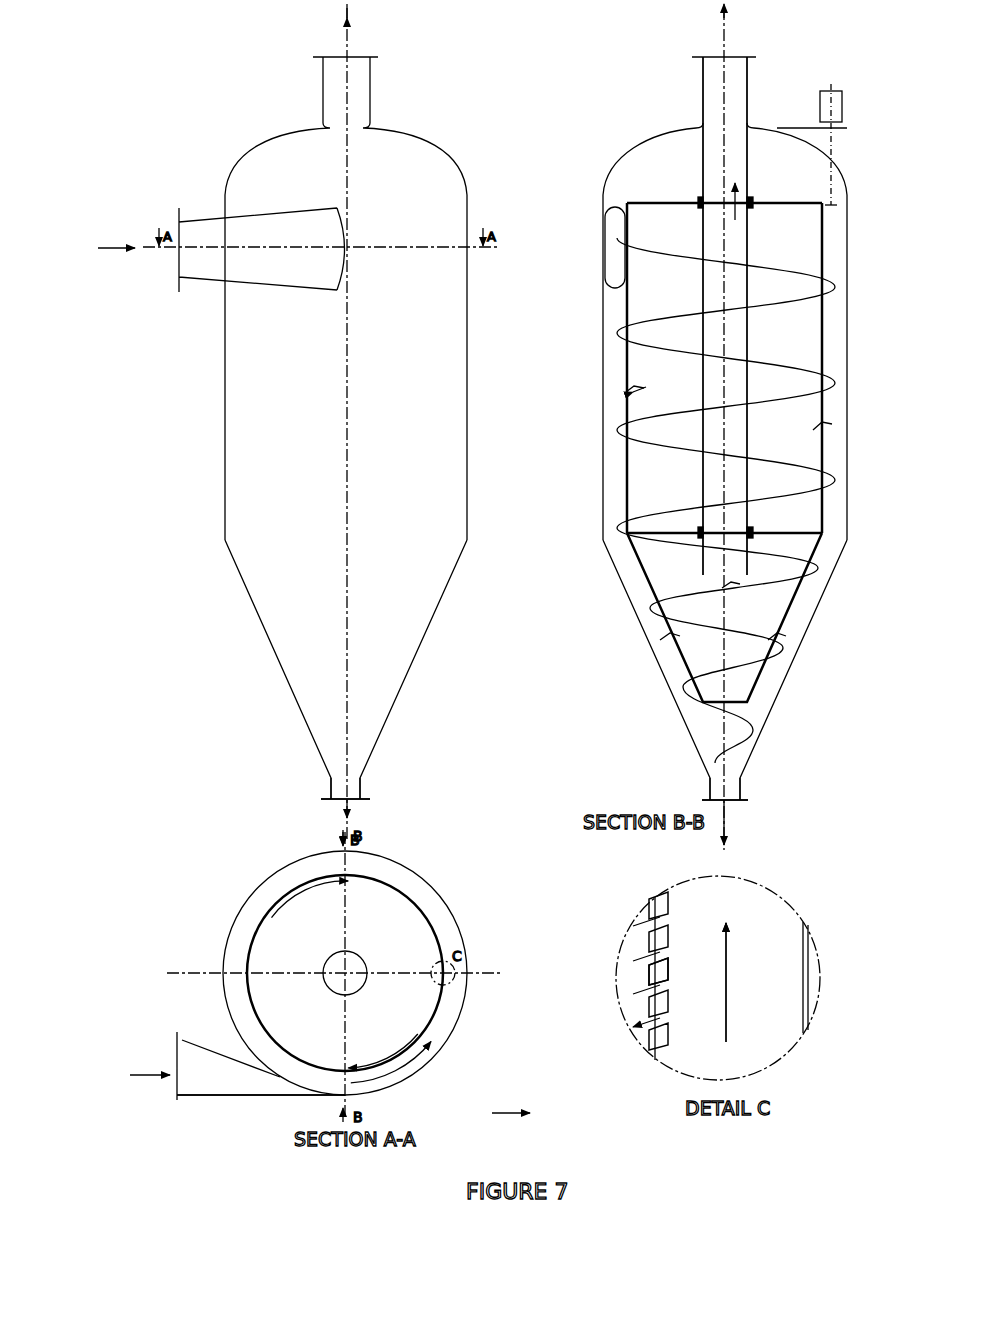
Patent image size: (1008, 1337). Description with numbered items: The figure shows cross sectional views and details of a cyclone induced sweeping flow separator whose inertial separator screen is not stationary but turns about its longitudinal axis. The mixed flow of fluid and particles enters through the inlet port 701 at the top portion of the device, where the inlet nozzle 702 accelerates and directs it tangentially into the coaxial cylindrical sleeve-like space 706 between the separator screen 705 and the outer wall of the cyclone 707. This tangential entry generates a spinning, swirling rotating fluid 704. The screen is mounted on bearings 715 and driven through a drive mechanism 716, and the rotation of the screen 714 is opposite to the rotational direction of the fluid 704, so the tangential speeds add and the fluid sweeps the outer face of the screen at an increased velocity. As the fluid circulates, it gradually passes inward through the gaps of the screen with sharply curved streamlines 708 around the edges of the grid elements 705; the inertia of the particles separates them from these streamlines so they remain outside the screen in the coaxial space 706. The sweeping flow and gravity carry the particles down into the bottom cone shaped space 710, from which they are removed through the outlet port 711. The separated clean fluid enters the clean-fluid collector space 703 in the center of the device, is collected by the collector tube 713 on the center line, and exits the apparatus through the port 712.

The inlet port 701 is at (120, 250).
The inlet nozzle 702 is at (242, 1090).
The clean-fluid collector space 703 is at (768, 340).
The rotating fluid 704 is at (700, 313).
The separator screen 705 is at (630, 410).
The coaxial cylindrical sleeve-like space 706 is at (626, 533).
The outer wall of the cyclone 707 is at (225, 432).
The curved streamlines 708 is at (635, 388).
The cone shaped space 710 is at (280, 664).
The outlet port 711 is at (336, 802).
The port 712 is at (330, 55).
The collector tube 713 is at (750, 240).
The rotation of the screen 714 is at (292, 894).
The bearings 715 is at (698, 208).
The drive mechanism 716 is at (820, 106).